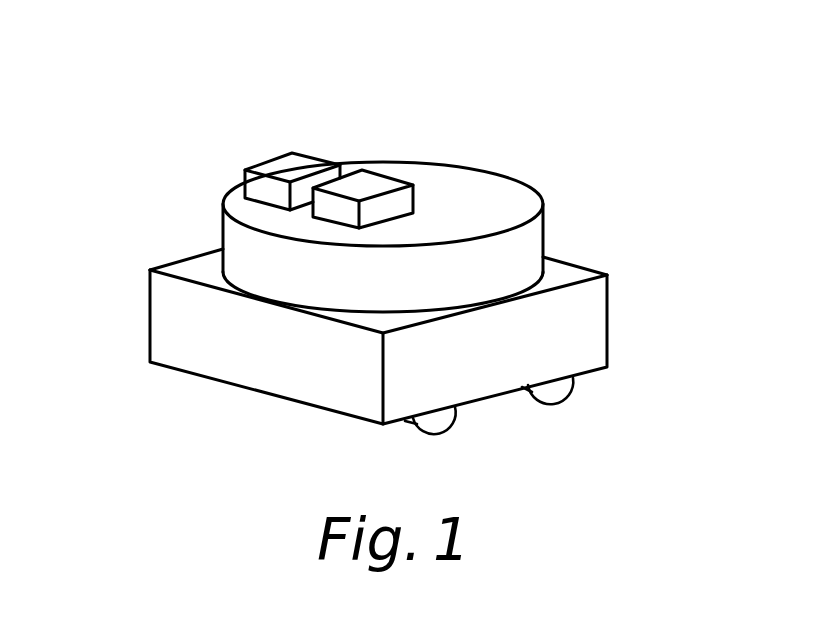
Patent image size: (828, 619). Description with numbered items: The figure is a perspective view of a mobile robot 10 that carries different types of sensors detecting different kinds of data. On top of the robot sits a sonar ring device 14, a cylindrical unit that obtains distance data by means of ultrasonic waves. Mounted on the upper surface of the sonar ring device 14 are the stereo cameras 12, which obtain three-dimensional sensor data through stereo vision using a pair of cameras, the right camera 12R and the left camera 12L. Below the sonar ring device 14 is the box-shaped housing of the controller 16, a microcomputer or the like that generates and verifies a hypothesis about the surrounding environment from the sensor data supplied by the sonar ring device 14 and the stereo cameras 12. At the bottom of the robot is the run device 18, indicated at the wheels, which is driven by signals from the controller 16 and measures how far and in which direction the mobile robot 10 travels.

The mobile robot 10 is at (666, 141).
The stereo cameras 12 is at (215, 72).
The right camera 12R is at (291, 171).
The left camera 12L is at (362, 183).
The sonar ring device 14 is at (257, 240).
The controller 16 is at (185, 310).
The run device 18 is at (490, 420).